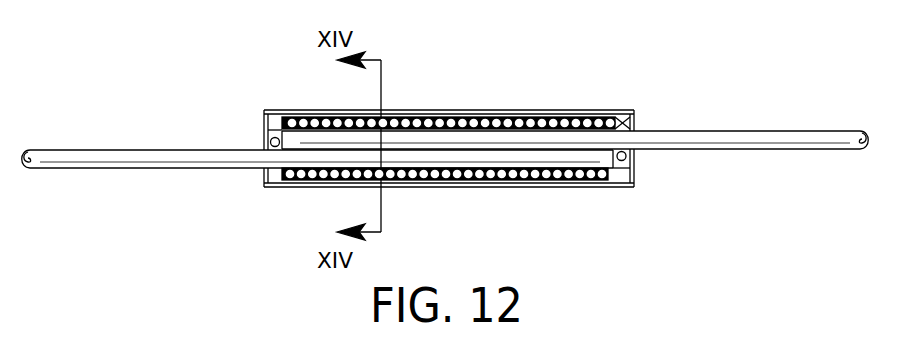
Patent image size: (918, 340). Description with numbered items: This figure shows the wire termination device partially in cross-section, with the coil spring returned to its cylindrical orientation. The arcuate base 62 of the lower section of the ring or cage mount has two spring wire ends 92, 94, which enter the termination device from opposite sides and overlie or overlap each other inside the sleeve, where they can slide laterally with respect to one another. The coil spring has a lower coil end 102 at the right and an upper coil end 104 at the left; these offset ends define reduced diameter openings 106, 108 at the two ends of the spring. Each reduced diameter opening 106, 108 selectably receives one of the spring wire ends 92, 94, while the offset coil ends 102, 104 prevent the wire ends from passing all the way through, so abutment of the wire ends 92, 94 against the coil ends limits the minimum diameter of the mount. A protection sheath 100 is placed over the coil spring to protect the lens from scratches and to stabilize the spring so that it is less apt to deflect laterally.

The arcuate base 62 is at (747, 112).
The spring wire end 92 is at (503, 135).
The spring wire end 94 is at (317, 160).
The plastic sheath 100 is at (418, 114).
The lower coil end 102 is at (626, 162).
The upper coil end 104 is at (270, 138).
The reduced diameter opening 106 is at (628, 110).
The reduced diameter opening 108 is at (285, 175).